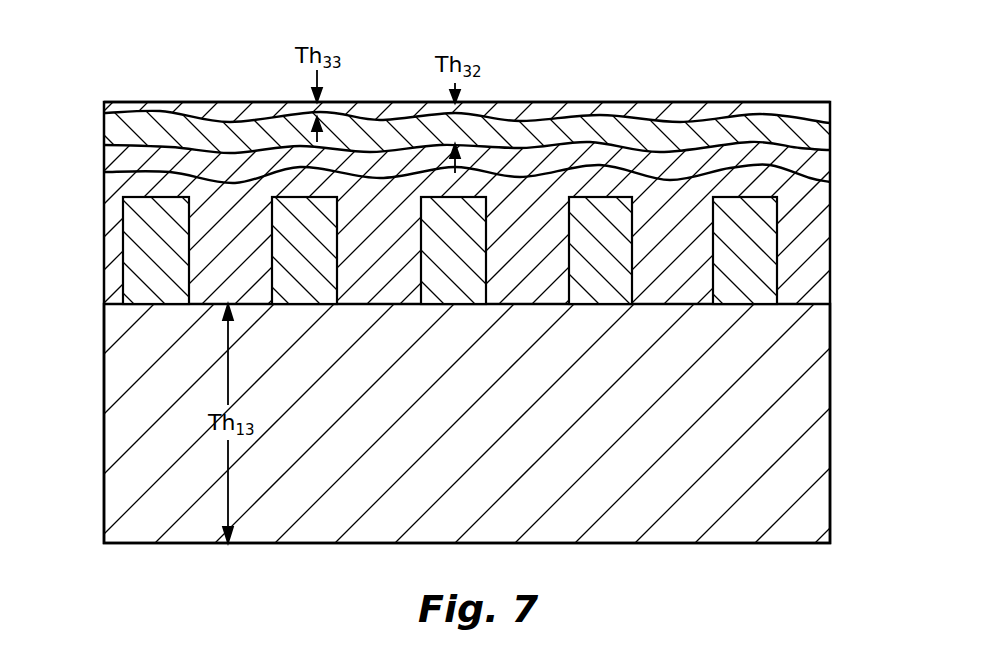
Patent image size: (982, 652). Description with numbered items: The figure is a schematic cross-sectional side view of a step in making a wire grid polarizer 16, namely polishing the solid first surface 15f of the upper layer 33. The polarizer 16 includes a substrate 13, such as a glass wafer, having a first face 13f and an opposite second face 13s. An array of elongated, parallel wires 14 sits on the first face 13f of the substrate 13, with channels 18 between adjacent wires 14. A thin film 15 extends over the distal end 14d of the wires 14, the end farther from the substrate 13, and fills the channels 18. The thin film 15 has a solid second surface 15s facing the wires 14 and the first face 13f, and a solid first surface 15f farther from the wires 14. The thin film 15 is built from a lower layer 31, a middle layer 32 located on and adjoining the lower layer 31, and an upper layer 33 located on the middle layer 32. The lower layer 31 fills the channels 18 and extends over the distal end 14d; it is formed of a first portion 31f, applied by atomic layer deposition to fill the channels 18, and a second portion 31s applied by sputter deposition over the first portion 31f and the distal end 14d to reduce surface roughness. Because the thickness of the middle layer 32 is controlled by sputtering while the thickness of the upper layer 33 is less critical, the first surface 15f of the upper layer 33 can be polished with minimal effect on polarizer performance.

The substrate 13 is at (493, 426).
The first face 13f is at (805, 307).
The second face 13s is at (780, 546).
The wires 14 is at (759, 289).
The distal end 14d is at (757, 198).
The thin film 15 is at (627, 178).
The solid first surface 15f is at (213, 102).
The solid second surface 15s is at (157, 197).
The wire grid polarizer 16 is at (878, 330).
The channels 18 is at (449, 253).
The lower layer 31 is at (112, 220).
The first portion 31f is at (822, 268).
The second portion 31s is at (822, 162).
The middle layer 32 is at (112, 130).
The upper layer 33 is at (112, 110).